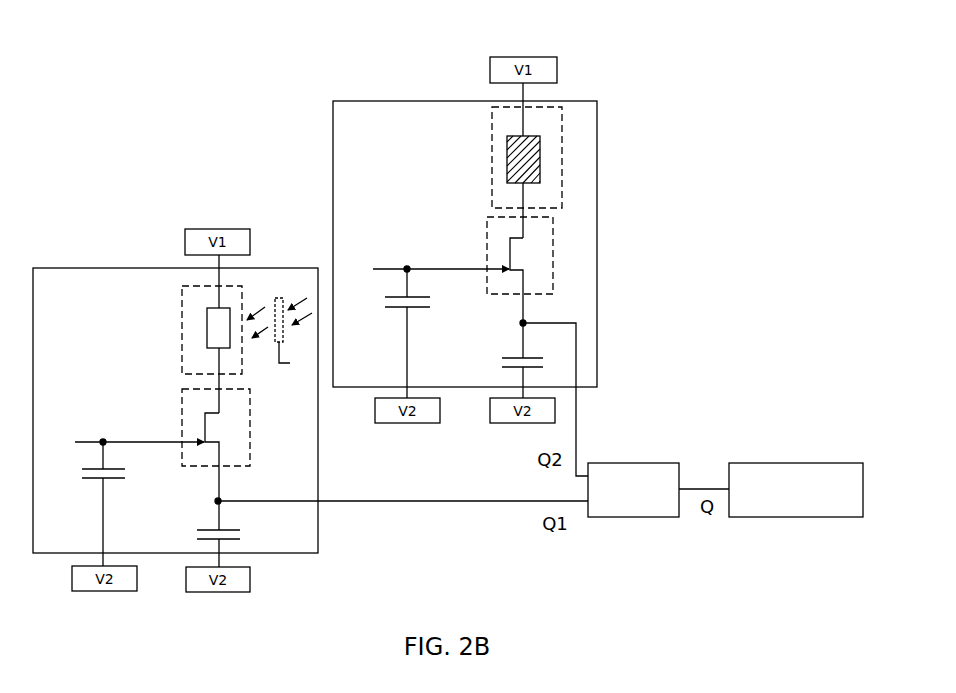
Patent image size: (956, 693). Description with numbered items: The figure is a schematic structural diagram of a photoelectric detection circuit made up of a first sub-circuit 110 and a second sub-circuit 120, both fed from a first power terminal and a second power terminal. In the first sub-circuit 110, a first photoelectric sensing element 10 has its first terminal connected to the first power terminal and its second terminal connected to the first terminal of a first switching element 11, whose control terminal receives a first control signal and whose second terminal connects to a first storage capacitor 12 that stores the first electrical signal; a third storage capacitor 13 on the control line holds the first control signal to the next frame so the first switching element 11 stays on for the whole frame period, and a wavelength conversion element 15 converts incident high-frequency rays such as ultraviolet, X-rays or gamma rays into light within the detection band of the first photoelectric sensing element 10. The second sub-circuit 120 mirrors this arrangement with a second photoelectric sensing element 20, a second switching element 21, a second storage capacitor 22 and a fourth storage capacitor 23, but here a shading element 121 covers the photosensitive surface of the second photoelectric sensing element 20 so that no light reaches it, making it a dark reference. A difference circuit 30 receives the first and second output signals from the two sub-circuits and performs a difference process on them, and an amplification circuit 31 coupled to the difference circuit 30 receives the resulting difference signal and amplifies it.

The first sub-circuit 110 is at (175, 393).
The second sub-circuit 120 is at (465, 226).
The first photoelectric sensing element 10 is at (182, 315).
The first switching element 11 is at (182, 410).
The first storage capacitor 12 is at (208, 529).
The third storage capacitor 13 is at (92, 468).
The wavelength conversion element 15 is at (281, 340).
The second photoelectric sensing element 20 is at (541, 157).
The shading element 121 is at (540, 158).
The second switching element 21 is at (487, 240).
The second storage capacitor 22 is at (512, 358).
The fourth storage capacitor 23 is at (397, 297).
The difference circuit 30 is at (662, 463).
The amplification circuit 31 is at (772, 463).